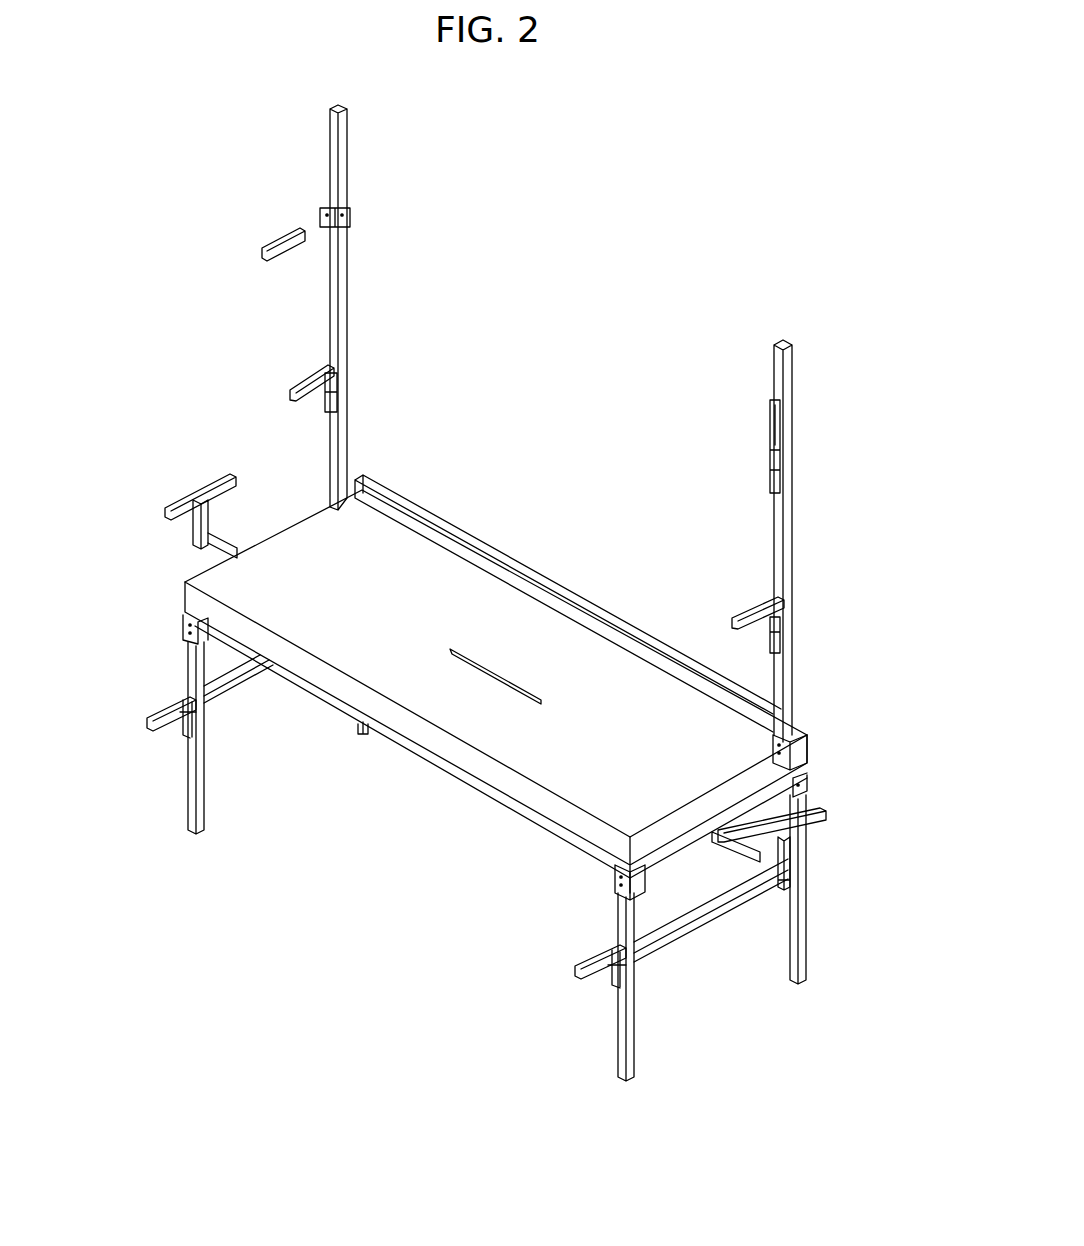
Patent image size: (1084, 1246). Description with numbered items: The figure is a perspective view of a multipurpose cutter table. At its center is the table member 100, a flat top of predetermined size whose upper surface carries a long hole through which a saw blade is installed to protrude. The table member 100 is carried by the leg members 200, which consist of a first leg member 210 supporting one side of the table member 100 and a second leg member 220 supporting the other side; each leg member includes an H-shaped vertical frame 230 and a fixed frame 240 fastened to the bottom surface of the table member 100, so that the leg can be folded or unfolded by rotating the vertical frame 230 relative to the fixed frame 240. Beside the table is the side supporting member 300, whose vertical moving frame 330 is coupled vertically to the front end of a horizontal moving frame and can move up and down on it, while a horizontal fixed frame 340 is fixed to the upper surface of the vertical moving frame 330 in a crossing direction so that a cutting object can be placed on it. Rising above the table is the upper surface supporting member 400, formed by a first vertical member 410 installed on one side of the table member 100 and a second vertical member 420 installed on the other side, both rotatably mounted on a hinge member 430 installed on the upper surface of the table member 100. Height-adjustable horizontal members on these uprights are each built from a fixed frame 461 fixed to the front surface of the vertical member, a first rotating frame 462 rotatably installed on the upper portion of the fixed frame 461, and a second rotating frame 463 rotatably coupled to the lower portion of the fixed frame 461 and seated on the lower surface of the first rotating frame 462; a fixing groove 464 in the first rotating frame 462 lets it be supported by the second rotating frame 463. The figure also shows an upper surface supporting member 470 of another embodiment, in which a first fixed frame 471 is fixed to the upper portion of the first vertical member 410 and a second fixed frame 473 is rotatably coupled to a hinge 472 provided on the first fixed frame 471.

The table member 100 is at (405, 760).
The leg members 200 is at (715, 948).
The first leg member 210 is at (171, 660).
The second leg member 220 is at (651, 1018).
The vertical frame 230 is at (228, 690).
The fixed frame 240 is at (183, 617).
The side supporting member 300 is at (185, 490).
The vertical moving frame 330 is at (792, 856).
The horizontal fixed frame 340 is at (826, 814).
The upper surface supporting member 400 is at (511, 437).
The first vertical member 410 is at (357, 350).
The second vertical member 420 is at (809, 690).
The hinge member 430 is at (793, 747).
The fixed frame 461 is at (340, 400).
The first rotating frame 462 is at (300, 383).
The second rotating frame 463 is at (320, 405).
The fixing groove 464 is at (770, 432).
The upper surface supporting member 470 is at (210, 201).
The first fixed frame 471 is at (325, 212).
The hinge 472 is at (325, 218).
The second fixed frame 473 is at (270, 246).